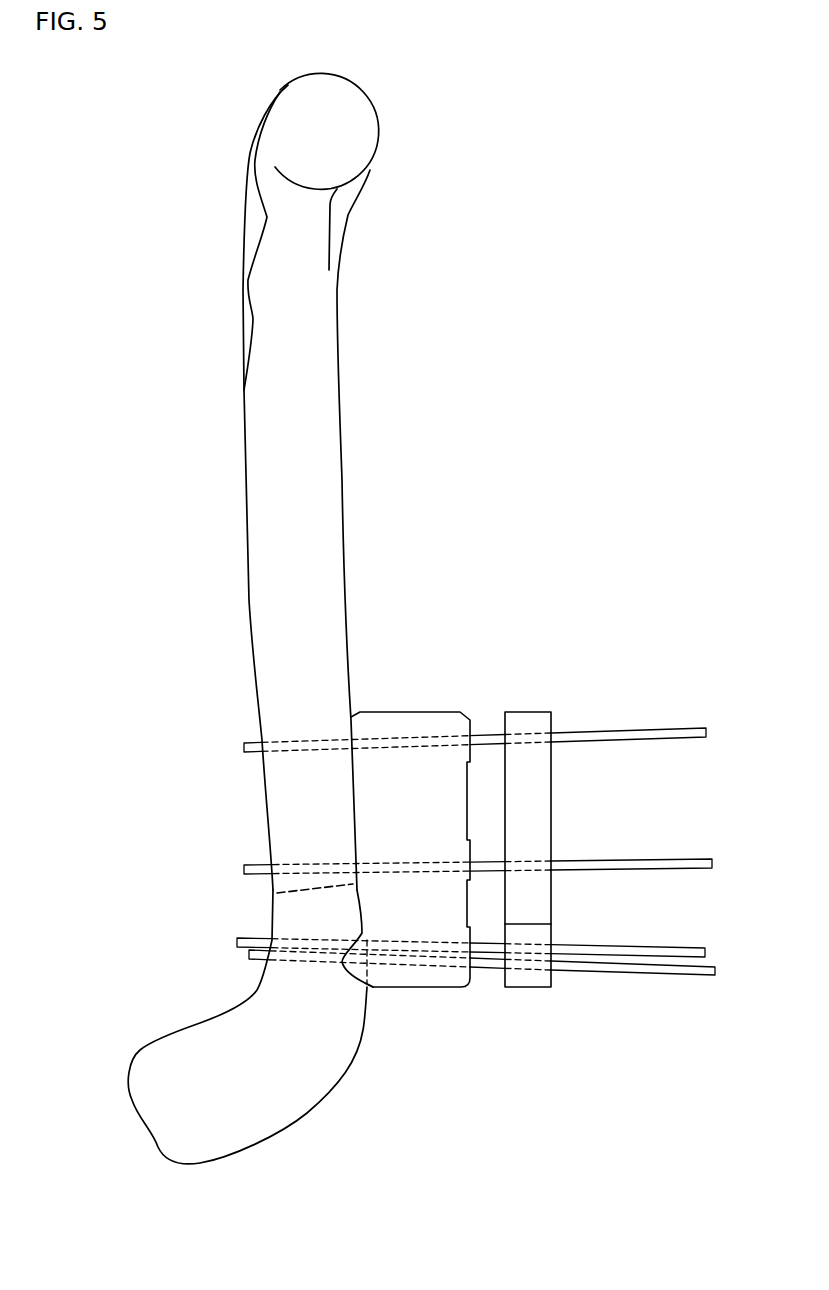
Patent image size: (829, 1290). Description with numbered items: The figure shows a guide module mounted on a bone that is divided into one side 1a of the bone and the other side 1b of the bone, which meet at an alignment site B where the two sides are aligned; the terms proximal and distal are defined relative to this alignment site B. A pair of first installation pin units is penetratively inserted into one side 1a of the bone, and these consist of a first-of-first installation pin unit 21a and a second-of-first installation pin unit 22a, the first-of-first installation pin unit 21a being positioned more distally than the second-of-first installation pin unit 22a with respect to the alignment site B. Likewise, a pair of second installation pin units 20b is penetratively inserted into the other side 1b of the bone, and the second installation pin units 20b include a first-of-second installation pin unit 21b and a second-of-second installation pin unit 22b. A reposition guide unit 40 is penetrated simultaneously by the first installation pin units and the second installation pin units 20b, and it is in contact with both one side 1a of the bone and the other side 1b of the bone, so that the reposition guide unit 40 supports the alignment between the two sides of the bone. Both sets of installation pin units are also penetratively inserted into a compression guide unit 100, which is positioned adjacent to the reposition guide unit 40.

The one side of the bone 1a is at (282, 563).
The other side of the bone 1b is at (167, 1065).
The alignment site B is at (310, 898).
The reposition guide unit 40 is at (433, 985).
The compression guide unit 100 is at (530, 720).
The first-of-first installation pin unit 21a is at (640, 733).
The second-of-first installation pin unit 22a is at (640, 862).
The second installation pin units 20b is at (476, 1013).
The first-of-second installation pin unit 21b is at (603, 950).
The second-of-second installation pin unit 22b is at (662, 967).